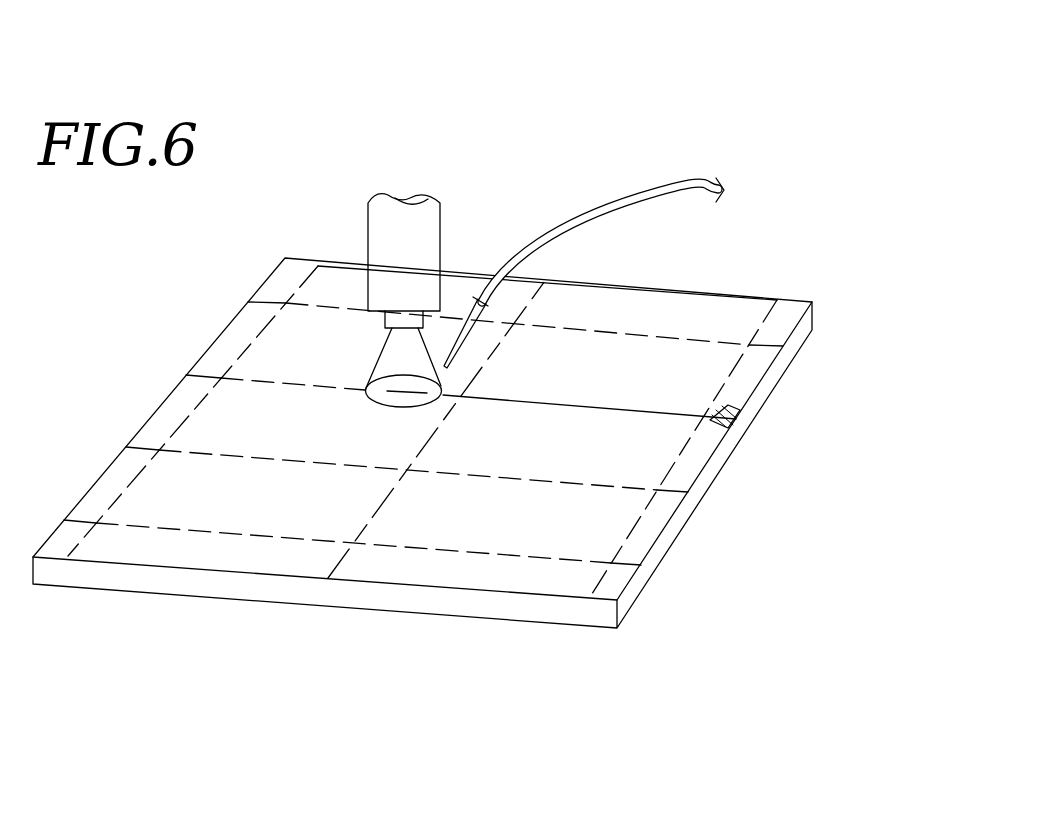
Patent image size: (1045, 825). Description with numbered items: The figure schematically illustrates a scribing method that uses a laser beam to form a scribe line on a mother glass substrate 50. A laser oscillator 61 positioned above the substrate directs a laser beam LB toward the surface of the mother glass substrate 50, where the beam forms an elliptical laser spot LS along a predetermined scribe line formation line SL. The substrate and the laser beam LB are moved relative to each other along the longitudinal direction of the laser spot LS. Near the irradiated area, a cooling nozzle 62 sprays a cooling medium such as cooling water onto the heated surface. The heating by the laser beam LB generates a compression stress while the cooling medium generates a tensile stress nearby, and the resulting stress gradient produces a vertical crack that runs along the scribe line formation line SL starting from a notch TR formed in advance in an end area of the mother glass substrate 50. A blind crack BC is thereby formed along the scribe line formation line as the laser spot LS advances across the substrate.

The mother glass substrate 50 is at (519, 608).
The laser oscillator 61 is at (368, 237).
The cooling nozzle 62 is at (463, 317).
The laser beam LB is at (380, 357).
The laser spot LS is at (397, 403).
The scribe line formation line SL is at (233, 323).
The blind crack BC is at (623, 403).
The notch TR is at (733, 406).